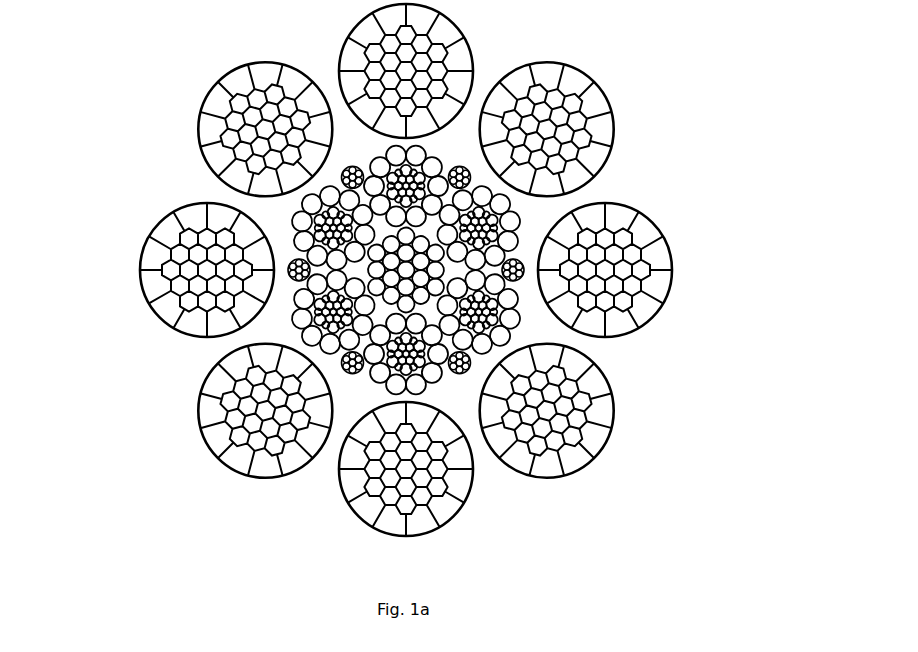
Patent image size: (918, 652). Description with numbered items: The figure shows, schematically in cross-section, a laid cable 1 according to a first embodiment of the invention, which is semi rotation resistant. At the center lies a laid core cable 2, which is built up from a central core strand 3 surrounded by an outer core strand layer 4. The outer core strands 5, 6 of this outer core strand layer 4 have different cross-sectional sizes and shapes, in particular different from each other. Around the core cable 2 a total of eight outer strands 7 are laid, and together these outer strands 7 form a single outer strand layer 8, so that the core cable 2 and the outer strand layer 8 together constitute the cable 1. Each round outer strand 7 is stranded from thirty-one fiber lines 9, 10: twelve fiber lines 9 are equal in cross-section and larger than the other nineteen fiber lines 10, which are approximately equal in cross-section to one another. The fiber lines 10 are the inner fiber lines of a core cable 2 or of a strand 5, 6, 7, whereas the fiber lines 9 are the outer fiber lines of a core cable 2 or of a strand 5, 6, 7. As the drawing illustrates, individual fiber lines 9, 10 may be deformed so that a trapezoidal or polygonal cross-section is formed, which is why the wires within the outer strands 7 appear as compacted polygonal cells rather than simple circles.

The laid cable 1 is at (107, 129).
The laid core cable 2 is at (460, 150).
The core strand 3 is at (453, 272).
The outer core strand layer 4 is at (528, 330).
The outer core strand 5 is at (458, 378).
The outer core strand 6 is at (370, 378).
The outer strand 7 is at (143, 248).
The outer strand layer 8 is at (645, 197).
The fiber line 9 is at (370, 32).
The fiber line 10 is at (377, 165).